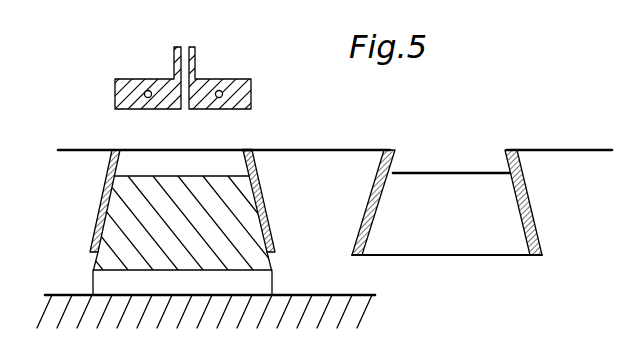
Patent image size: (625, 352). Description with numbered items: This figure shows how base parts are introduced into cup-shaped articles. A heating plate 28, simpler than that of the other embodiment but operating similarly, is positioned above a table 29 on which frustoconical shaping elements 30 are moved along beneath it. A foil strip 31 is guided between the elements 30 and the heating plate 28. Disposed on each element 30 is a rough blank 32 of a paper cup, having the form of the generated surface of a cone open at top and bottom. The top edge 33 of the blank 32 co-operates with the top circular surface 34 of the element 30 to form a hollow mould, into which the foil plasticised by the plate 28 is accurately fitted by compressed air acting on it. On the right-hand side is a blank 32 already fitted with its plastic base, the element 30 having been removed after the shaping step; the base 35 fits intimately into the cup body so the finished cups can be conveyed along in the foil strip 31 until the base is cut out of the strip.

The heating plate 28 is at (236, 80).
The table 29 is at (60, 316).
The frustoconical shaping element 30 is at (125, 245).
The foil strip 31 is at (72, 148).
The rough blank 32 is at (104, 193).
The top edge 33 is at (250, 165).
The top circular surface 34 is at (263, 198).
The bottom 35 is at (471, 172).